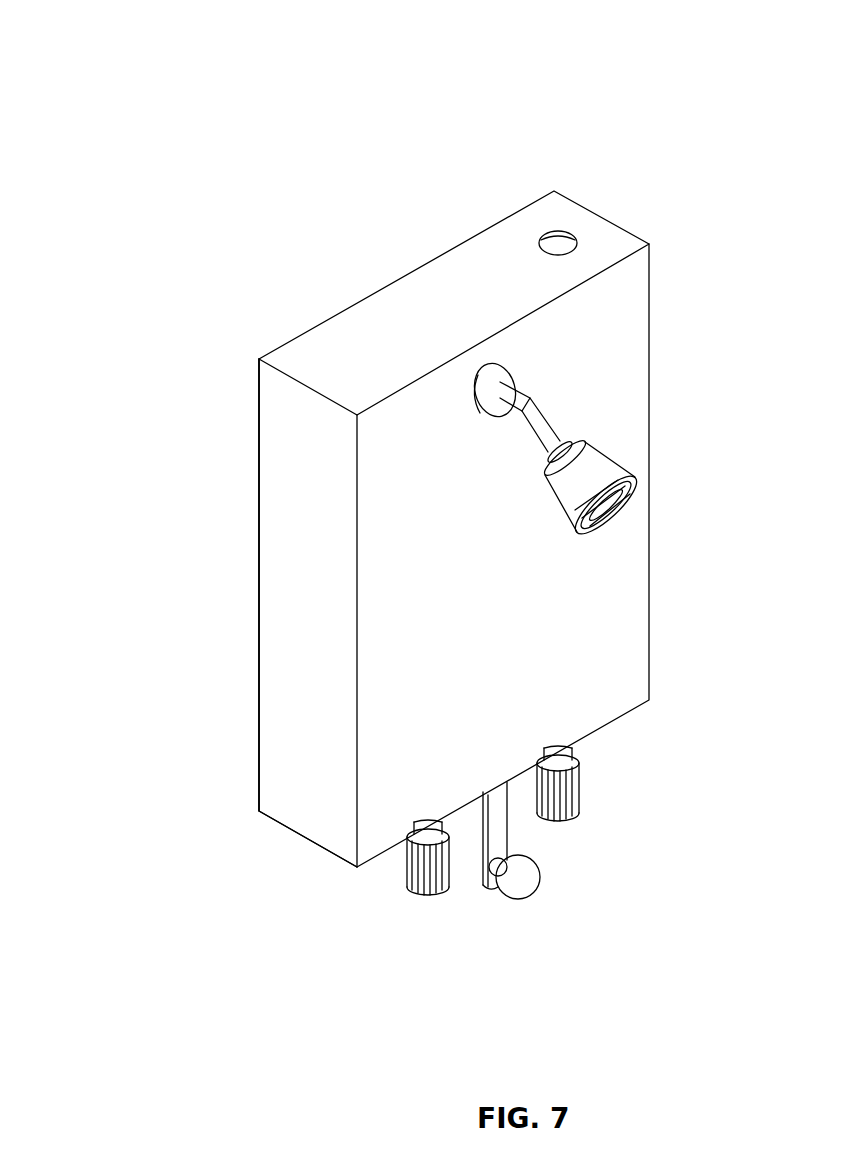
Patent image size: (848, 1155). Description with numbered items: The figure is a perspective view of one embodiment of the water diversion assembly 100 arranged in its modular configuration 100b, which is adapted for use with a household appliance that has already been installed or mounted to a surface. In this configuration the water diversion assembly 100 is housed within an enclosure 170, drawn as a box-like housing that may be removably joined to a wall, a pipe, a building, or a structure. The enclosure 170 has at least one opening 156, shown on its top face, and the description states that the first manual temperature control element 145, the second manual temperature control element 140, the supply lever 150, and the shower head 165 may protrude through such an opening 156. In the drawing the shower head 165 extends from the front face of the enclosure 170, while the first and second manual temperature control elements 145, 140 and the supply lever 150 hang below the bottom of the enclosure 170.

The water diversion assembly 100 is at (182, 68).
The modular configuration 100b is at (193, 352).
The enclosure 170 is at (295, 610).
The opening 156 is at (558, 248).
The shower head 165 is at (632, 467).
The second manual temperature control element 140 is at (417, 895).
The first manual temperature control element 145 is at (583, 823).
The supply lever 150 is at (520, 905).